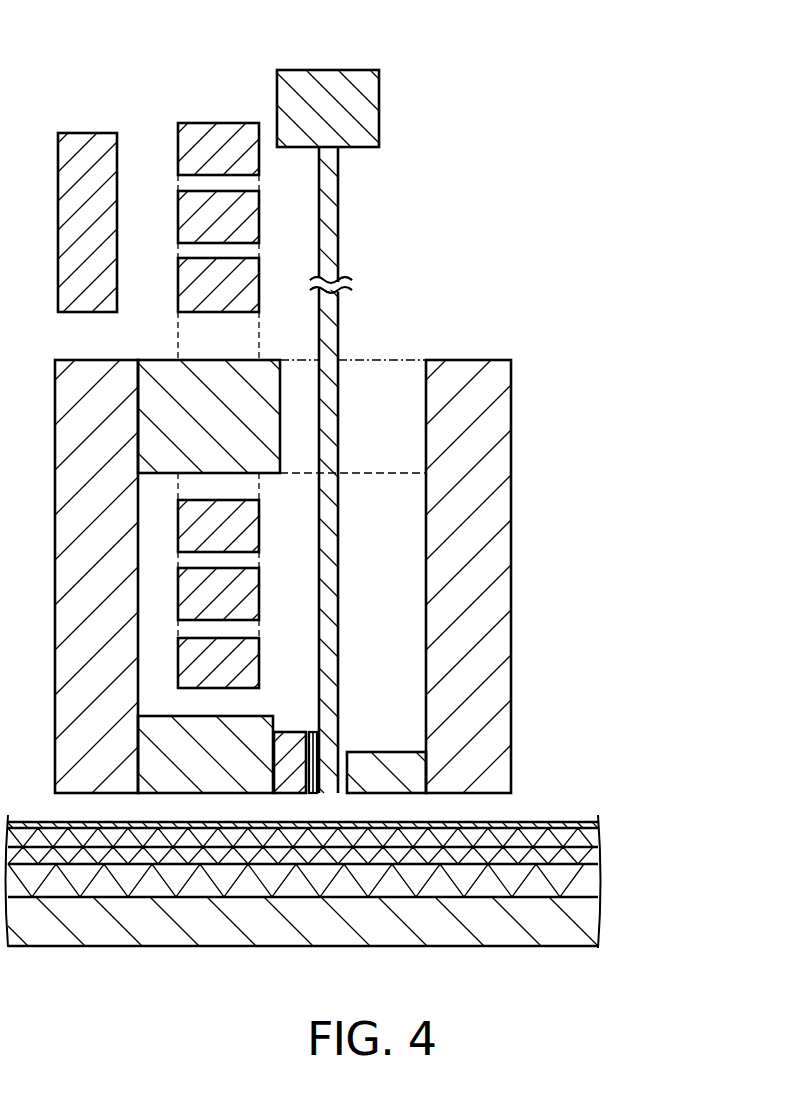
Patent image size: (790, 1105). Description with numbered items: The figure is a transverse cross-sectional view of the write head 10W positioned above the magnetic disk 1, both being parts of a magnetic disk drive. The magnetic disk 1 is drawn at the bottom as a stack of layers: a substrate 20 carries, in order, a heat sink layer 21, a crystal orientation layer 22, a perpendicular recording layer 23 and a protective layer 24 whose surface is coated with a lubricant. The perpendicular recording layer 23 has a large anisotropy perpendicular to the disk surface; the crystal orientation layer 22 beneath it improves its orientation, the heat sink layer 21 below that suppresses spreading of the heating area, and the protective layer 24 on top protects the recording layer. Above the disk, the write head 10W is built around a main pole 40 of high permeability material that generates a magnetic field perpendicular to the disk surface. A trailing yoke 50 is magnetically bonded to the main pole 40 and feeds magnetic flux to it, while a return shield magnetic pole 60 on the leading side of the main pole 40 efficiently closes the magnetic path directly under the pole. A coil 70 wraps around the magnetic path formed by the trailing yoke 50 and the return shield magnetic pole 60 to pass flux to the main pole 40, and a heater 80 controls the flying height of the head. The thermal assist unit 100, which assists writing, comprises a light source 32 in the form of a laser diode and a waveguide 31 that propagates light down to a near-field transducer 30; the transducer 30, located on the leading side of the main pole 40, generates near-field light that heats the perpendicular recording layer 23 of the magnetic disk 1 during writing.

The magnetic disk 1 is at (681, 841).
The write head 10W is at (550, 257).
The substrate 20 is at (593, 922).
The heat sink layer 21 is at (593, 879).
The crystal orientation layer 22 is at (595, 852).
The perpendicular recording layer 23 is at (595, 838).
The protective layer 24 is at (600, 823).
The near-field transducer 30 is at (312, 732).
The waveguide 31 is at (339, 612).
The light source 32 is at (380, 108).
The main pole 40 is at (290, 732).
The trailing yoke 50 is at (62, 564).
The return shield magnetic pole 60 is at (512, 572).
The coil 70 is at (181, 148).
The heater 80 is at (88, 133).
The thermal assist unit 100 is at (262, 67).